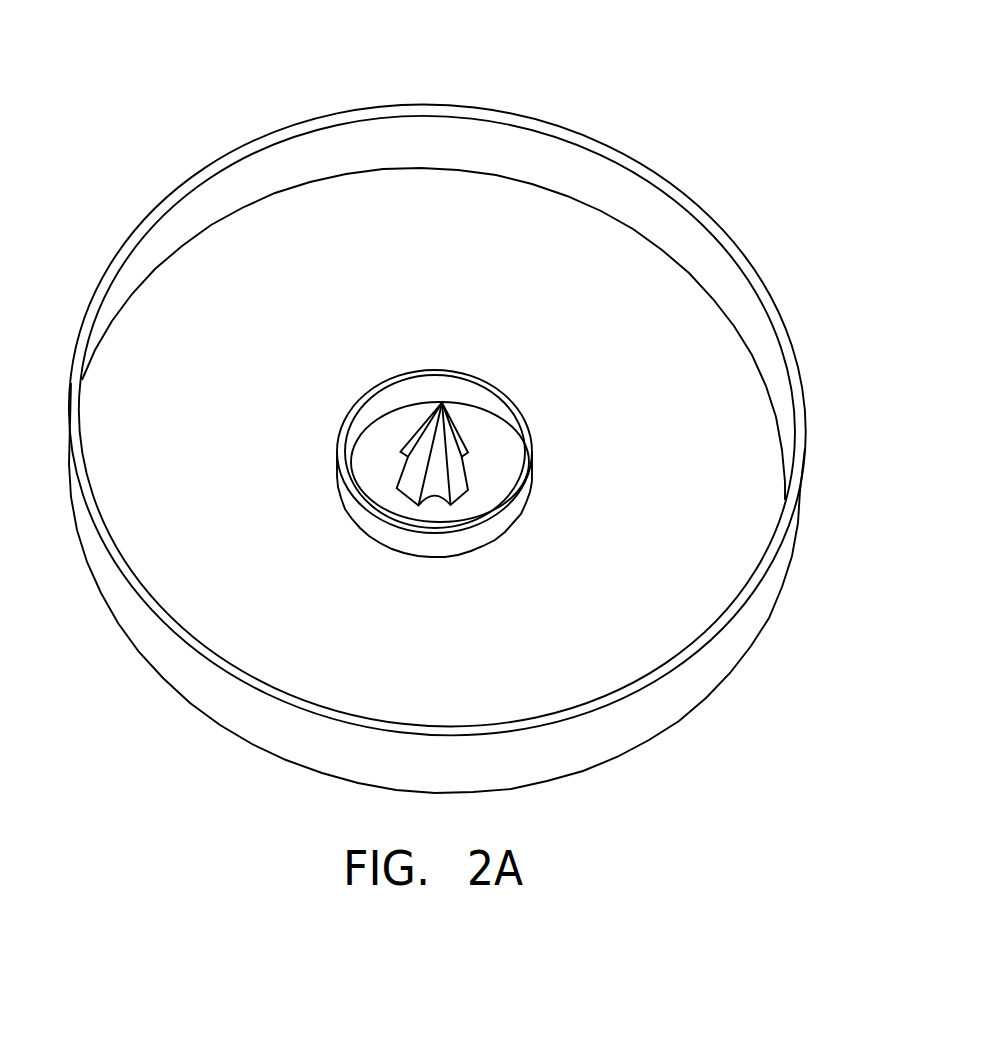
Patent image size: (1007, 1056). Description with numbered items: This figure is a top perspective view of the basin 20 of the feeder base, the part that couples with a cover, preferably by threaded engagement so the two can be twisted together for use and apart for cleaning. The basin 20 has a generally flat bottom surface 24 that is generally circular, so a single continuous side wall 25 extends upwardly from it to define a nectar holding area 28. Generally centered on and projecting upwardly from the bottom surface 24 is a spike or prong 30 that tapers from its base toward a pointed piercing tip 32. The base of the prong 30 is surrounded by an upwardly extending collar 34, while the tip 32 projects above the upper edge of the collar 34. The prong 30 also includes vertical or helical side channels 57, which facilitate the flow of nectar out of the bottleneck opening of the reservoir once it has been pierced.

The basin 20 is at (632, 146).
The bottom surface 24 is at (547, 631).
The side wall 25 is at (705, 252).
The nectar holding area 28 is at (210, 252).
The spike or prong 30 is at (428, 442).
The pointed tip 32 is at (442, 403).
The collar 34 is at (490, 405).
The side channels 57 is at (440, 475).